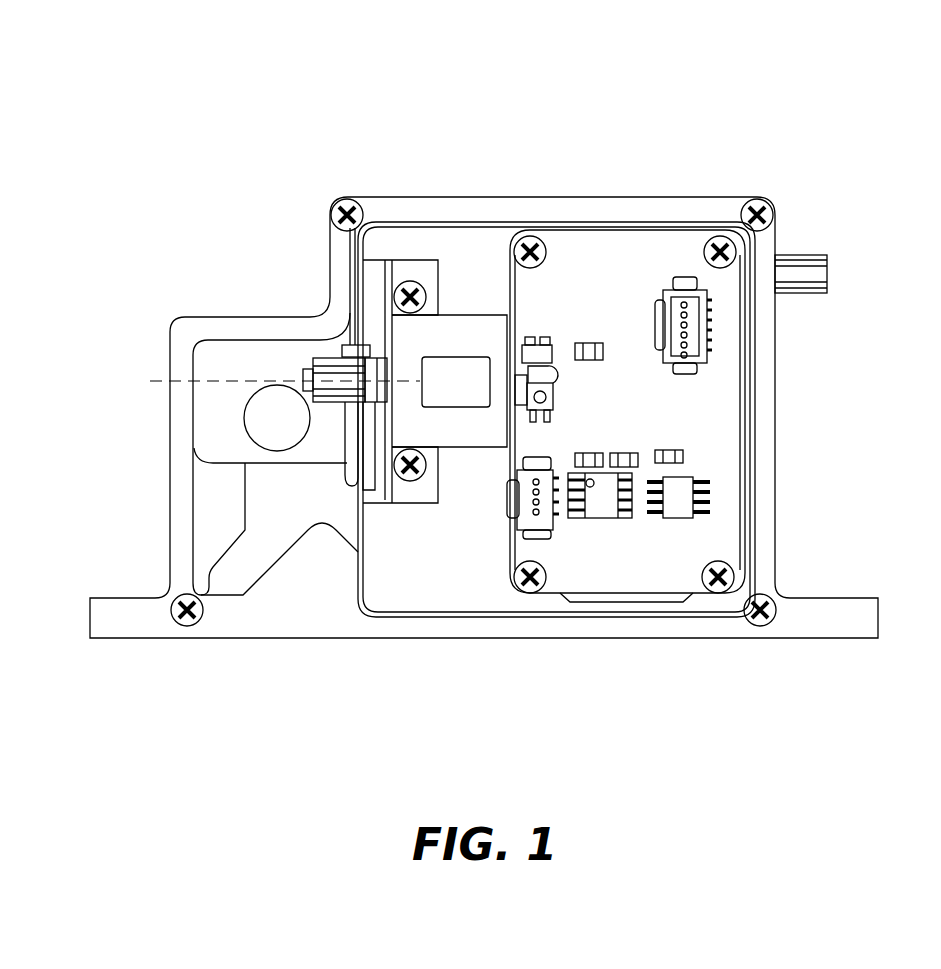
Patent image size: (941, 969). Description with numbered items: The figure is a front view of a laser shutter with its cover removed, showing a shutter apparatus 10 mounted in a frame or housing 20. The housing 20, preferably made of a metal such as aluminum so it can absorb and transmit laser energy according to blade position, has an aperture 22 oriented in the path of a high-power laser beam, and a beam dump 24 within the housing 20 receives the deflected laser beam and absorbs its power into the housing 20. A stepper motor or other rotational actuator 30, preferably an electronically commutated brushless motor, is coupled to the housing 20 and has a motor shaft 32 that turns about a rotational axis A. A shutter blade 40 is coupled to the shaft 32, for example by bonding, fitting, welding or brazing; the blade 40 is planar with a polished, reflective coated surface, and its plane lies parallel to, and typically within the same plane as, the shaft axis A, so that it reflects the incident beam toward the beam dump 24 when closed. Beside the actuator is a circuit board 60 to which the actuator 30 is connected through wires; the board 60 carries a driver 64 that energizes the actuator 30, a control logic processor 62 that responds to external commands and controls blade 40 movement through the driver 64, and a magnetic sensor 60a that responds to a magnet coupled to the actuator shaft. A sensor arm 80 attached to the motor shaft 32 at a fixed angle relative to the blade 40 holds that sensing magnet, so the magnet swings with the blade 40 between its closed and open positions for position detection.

The shutter apparatus 10 is at (233, 48).
The housing 20 is at (168, 311).
The aperture 22 is at (265, 415).
The beam dump 24 is at (242, 563).
The rotational actuator 30 is at (445, 345).
The motor shaft 32 is at (307, 377).
The shutter blade 40 is at (320, 360).
The circuit board 60 is at (713, 422).
The magnetic sensor 60a is at (542, 340).
The control logic processor 62 is at (677, 500).
The driver 64 is at (600, 505).
The sensor arm 80 is at (540, 377).
The rotational axis A is at (158, 377).